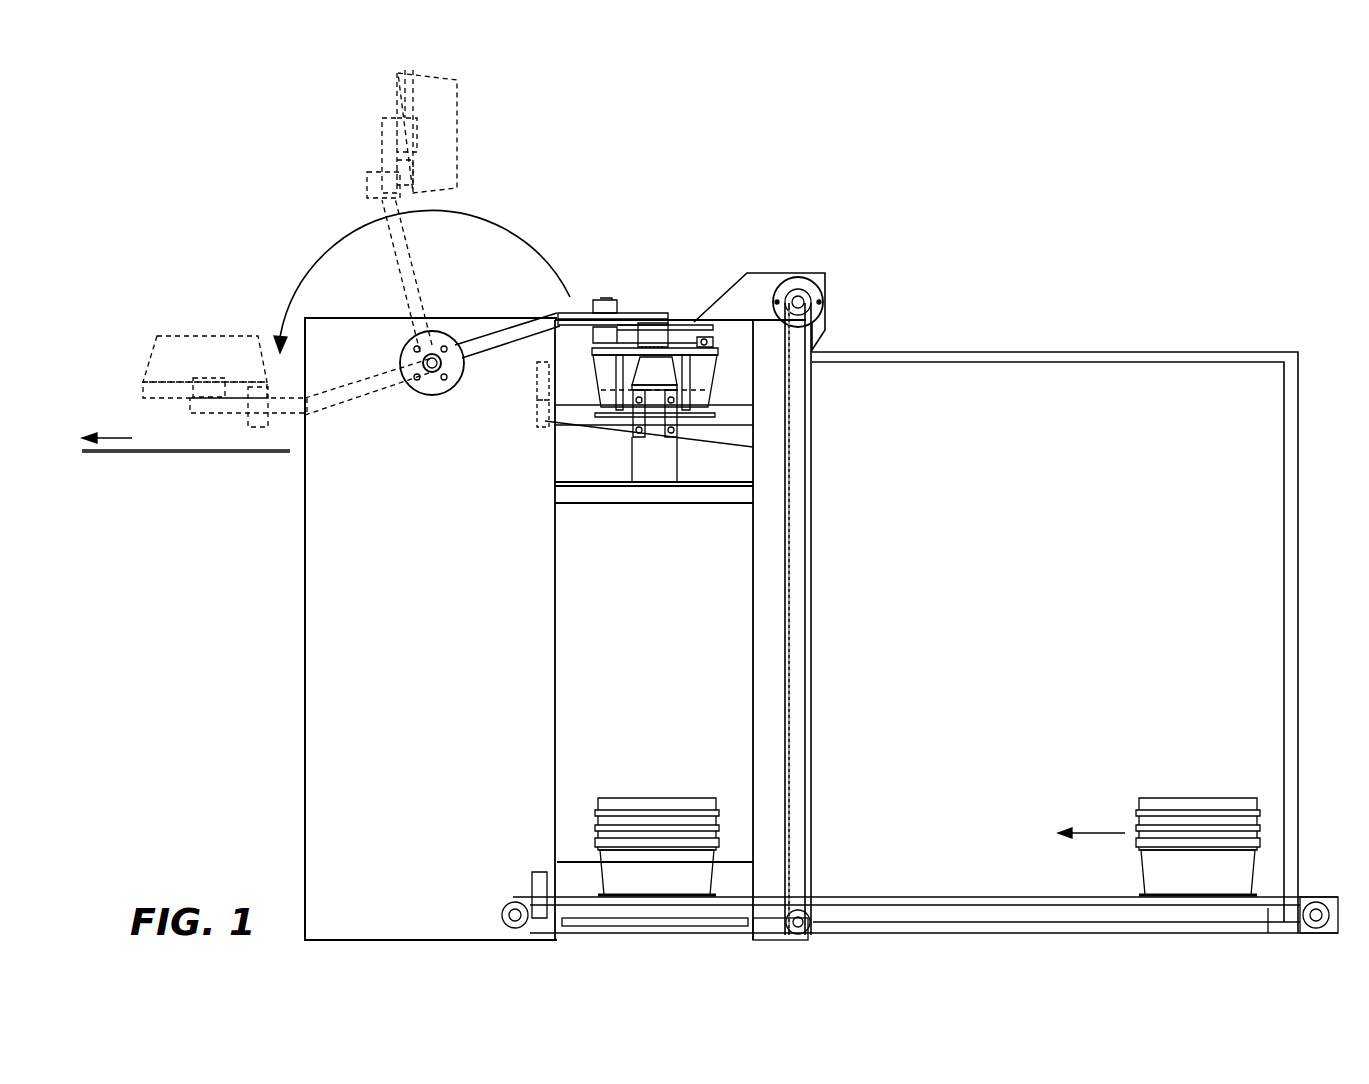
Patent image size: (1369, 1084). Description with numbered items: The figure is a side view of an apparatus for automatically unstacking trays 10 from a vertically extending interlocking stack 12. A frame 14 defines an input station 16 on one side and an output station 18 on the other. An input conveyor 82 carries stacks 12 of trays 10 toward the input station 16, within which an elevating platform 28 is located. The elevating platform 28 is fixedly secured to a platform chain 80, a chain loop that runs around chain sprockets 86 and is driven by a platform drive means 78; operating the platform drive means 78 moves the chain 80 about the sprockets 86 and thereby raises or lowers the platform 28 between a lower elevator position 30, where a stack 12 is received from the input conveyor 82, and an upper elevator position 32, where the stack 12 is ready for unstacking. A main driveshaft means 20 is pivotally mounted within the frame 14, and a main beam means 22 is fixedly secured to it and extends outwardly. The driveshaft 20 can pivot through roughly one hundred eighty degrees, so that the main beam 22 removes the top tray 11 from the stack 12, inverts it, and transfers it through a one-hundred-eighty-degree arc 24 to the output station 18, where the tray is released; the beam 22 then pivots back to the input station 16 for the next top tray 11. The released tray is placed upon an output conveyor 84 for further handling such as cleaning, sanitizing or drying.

The tray 10 is at (452, 145).
The top tray 11 is at (683, 327).
The stack 12 is at (613, 805).
The frame 14 is at (780, 273).
The input station 16 is at (672, 671).
The output station 18 is at (230, 507).
The main driveshaft means 20 is at (433, 372).
The main beam means 22 is at (468, 347).
The 180 degree arc 24 is at (510, 230).
The elevating platform 28 is at (738, 418).
The lower elevator position 30 is at (587, 921).
The upper elevator position 32 is at (732, 403).
The platform drive means 78 is at (805, 296).
The platform chain 80 is at (812, 567).
The input conveyor 82 is at (970, 895).
The output conveyor 84 is at (165, 452).
The chain sprockets 86 is at (813, 893).